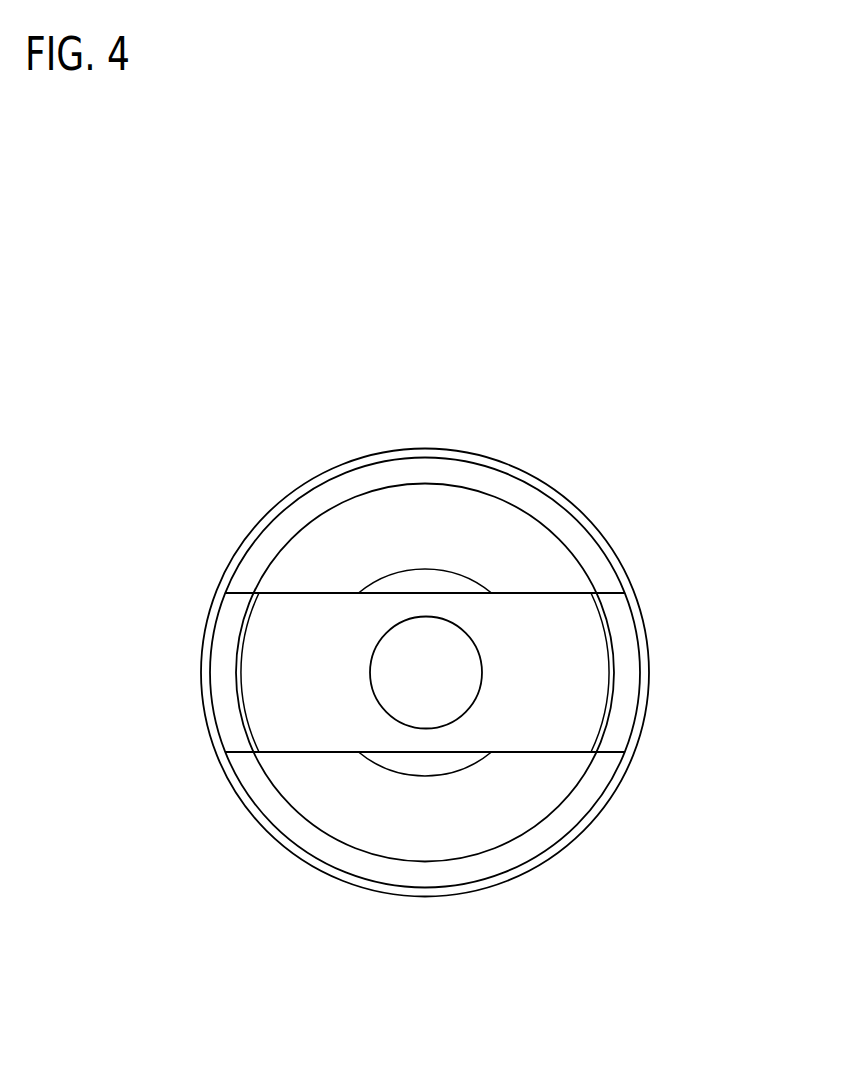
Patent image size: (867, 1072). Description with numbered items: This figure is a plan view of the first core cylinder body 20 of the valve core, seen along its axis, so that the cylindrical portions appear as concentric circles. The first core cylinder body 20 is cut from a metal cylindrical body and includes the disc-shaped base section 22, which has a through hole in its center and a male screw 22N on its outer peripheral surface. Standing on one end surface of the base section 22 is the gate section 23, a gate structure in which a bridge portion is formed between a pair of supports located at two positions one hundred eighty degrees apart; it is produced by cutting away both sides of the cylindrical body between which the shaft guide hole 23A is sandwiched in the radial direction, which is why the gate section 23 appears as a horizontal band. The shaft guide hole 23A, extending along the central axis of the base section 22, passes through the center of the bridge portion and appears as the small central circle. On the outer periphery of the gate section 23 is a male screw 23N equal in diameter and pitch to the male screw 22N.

The first core cylinder body 20 is at (641, 336).
The base section 22 is at (483, 518).
The male screw 22N is at (590, 530).
The gate section 23 is at (540, 642).
The shaft guide hole 23A is at (470, 636).
The male screw 23N is at (648, 645).